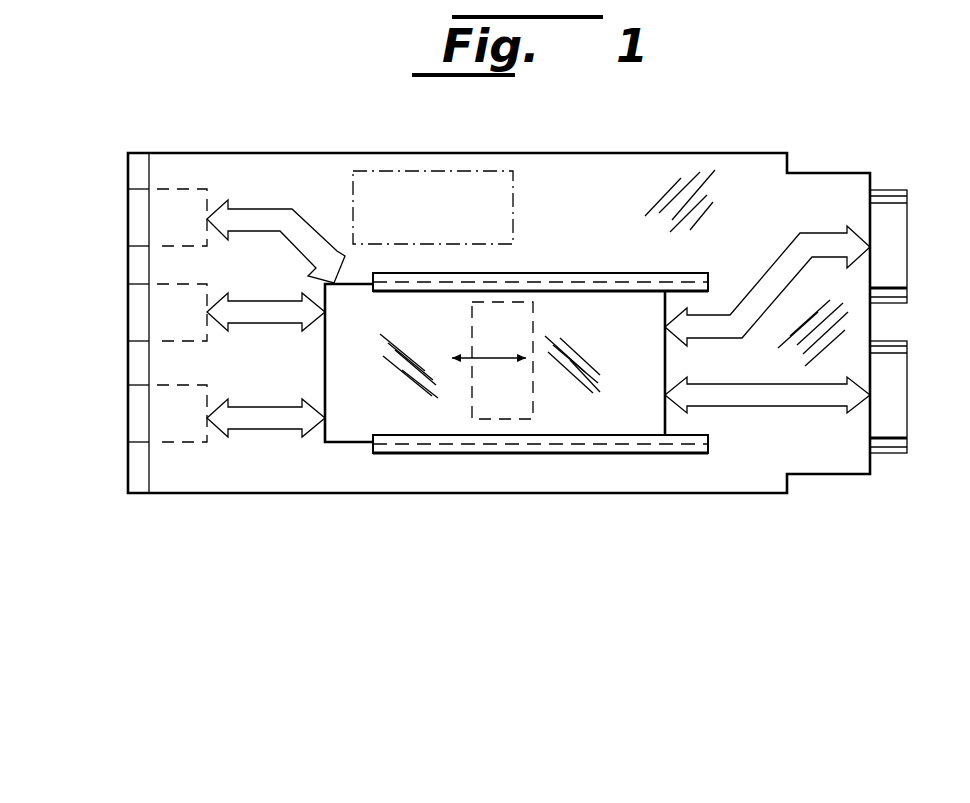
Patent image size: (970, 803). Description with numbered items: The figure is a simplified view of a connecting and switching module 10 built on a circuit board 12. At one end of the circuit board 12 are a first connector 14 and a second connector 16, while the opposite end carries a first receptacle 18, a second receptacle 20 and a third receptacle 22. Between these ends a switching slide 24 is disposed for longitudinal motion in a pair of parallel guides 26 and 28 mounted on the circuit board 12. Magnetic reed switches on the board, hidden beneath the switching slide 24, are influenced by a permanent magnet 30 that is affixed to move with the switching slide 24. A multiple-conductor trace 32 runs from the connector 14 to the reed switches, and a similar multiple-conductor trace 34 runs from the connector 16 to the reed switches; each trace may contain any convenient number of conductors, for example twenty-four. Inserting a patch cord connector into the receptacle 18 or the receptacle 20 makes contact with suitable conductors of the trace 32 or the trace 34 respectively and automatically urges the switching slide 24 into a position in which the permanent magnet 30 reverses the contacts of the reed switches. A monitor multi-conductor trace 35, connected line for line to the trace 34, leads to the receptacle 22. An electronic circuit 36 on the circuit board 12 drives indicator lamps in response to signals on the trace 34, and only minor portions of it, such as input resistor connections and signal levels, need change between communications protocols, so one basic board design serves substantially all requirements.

The connecting and switching module 10 is at (274, 112).
The circuit board 12 is at (619, 160).
The first connector 14 is at (895, 226).
The second connector 16 is at (895, 380).
The first receptacle 18 is at (142, 218).
The second receptacle 20 is at (142, 311).
The third receptacle 22 is at (142, 408).
The switching slide 24 is at (632, 308).
The guide 26 is at (688, 277).
The guide 28 is at (694, 446).
The permanent magnet 30 is at (510, 309).
The multiple-conductor trace 32 is at (300, 236).
The multiple-conductor trace 34 is at (262, 318).
The monitor multi-conductor trace 35 is at (262, 420).
The electronic circuit 36 is at (503, 200).